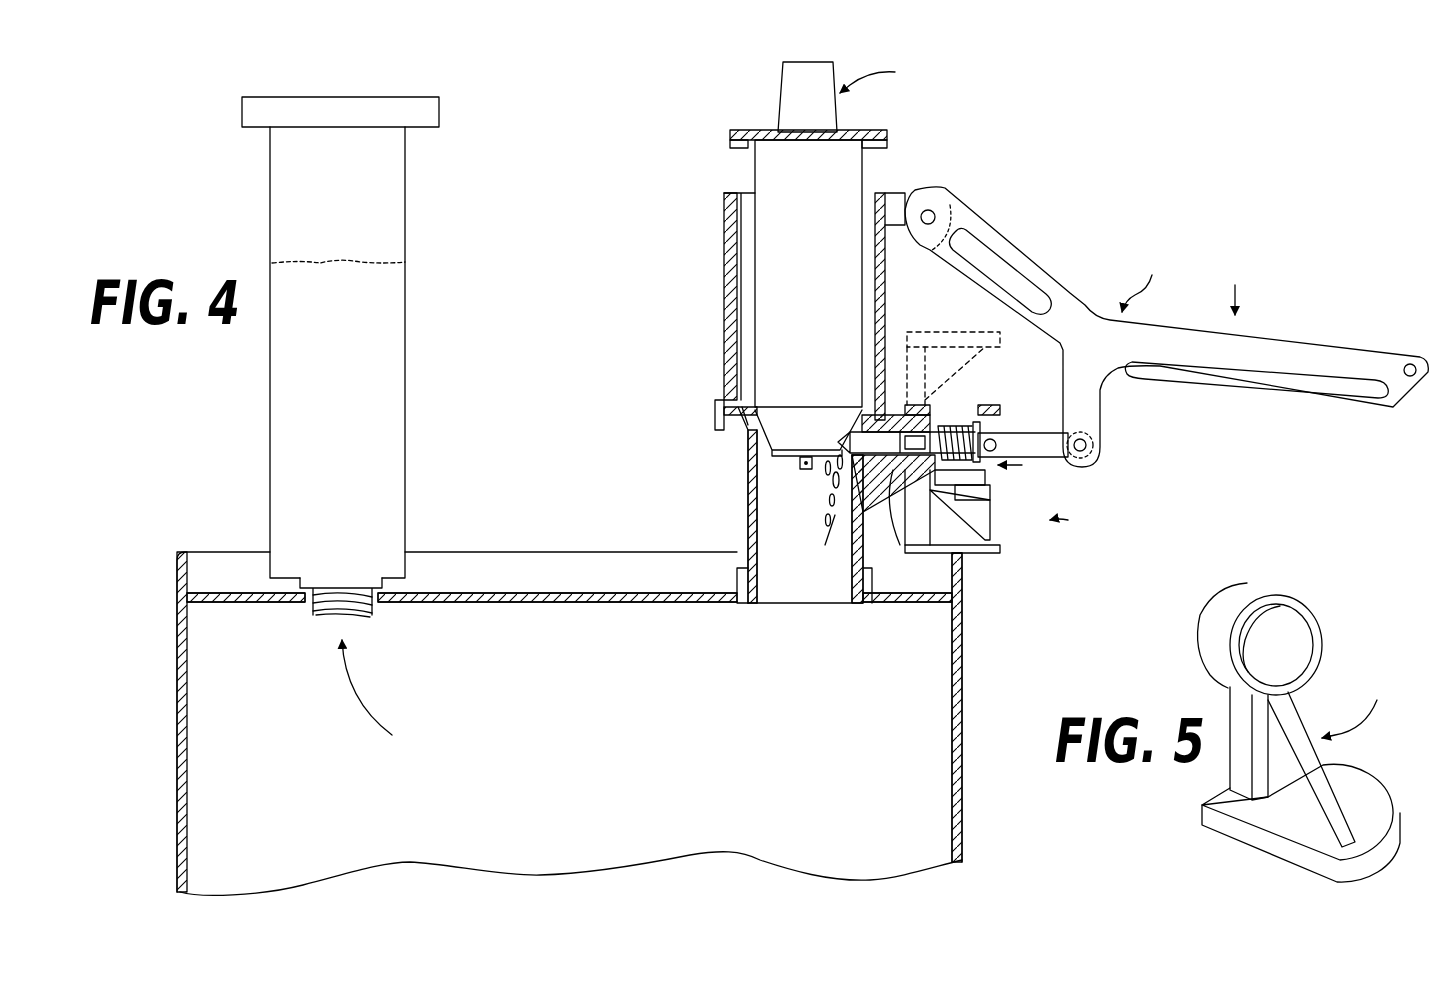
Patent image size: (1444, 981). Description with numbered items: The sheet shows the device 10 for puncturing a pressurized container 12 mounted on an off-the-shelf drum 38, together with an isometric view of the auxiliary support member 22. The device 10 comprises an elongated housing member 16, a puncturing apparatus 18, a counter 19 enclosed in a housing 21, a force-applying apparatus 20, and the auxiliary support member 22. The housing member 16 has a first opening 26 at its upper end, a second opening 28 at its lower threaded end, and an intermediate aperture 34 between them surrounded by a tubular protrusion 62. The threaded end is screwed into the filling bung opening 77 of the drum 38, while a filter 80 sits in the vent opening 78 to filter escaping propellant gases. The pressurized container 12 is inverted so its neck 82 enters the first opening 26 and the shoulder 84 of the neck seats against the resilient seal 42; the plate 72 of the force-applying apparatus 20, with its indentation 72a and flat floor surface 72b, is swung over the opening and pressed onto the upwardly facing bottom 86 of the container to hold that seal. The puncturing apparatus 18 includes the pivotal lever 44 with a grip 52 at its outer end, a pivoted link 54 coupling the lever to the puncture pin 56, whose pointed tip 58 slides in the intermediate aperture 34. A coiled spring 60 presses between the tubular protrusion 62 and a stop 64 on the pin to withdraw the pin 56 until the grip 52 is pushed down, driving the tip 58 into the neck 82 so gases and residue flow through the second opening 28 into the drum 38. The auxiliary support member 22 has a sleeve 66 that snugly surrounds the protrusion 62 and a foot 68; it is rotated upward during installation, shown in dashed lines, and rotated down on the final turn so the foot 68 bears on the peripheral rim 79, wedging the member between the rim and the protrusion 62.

In FIG. 4, the device 10 is at (975, 180).
In FIG. 4, the pressurized container 12 is at (758, 168).
In FIG. 4, the elongated housing member 16 is at (725, 240).
In FIG. 4, the puncturing apparatus 18 is at (1178, 278).
In FIG. 4, the counter 19 is at (1000, 490).
In FIG. 4, the force-applying apparatus 20 is at (854, 92).
In FIG. 4, the housing 21 is at (990, 530).
In FIG. 4, the auxiliary support member 22 is at (1078, 536).
In FIG. 5, the auxiliary support member 22 is at (1311, 756).
In FIG. 4, the first opening 26 is at (738, 183).
In FIG. 4, the second opening 28 is at (818, 588).
In FIG. 4, the intermediate aperture 34 is at (826, 516).
In FIG. 4, the drum 38 is at (565, 593).
In FIG. 4, the resilient seal 42 is at (722, 395).
In FIG. 4, the lever 44 is at (1055, 278).
In FIG. 4, the grip 52 is at (1325, 400).
In FIG. 4, the pivoted link 54 is at (1088, 457).
In FIG. 4, the puncture pin 56 is at (925, 440).
In FIG. 4, the pointed tip 58 is at (838, 432).
In FIG. 4, the coiled spring 60 is at (1000, 475).
In FIG. 4, the tubular protrusion 62 is at (918, 515).
In FIG. 4, the stop 64 is at (1000, 432).
In FIG. 5, the sleeve 66 is at (1285, 597).
In FIG. 4, the foot 68 is at (1000, 555).
In FIG. 5, the foot 68 is at (1260, 848).
In FIG. 4, the plate 72 is at (880, 128).
In FIG. 4, the indentation 72a is at (735, 148).
In FIG. 4, the flat floor surface 72b is at (882, 148).
In FIG. 4, the filling bung opening 77 is at (757, 580).
In FIG. 4, the vent opening 78 is at (375, 605).
In FIG. 4, the peripheral rim 79 is at (962, 555).
In FIG. 4, the filter 80 is at (406, 323).
In FIG. 4, the neck 82 is at (745, 440).
In FIG. 4, the shoulder 84 is at (770, 410).
In FIG. 4, the bottom 86 is at (775, 130).